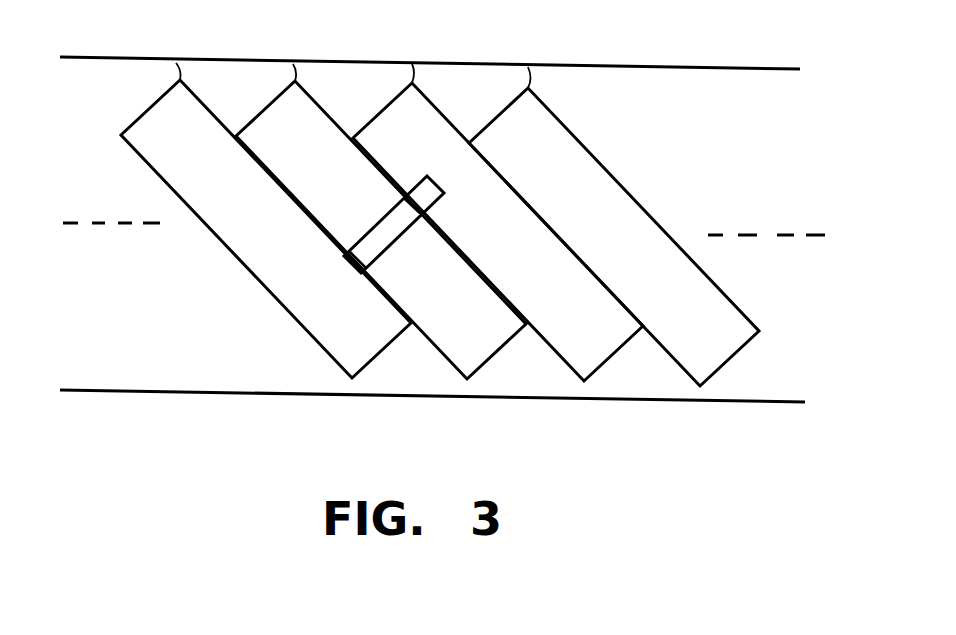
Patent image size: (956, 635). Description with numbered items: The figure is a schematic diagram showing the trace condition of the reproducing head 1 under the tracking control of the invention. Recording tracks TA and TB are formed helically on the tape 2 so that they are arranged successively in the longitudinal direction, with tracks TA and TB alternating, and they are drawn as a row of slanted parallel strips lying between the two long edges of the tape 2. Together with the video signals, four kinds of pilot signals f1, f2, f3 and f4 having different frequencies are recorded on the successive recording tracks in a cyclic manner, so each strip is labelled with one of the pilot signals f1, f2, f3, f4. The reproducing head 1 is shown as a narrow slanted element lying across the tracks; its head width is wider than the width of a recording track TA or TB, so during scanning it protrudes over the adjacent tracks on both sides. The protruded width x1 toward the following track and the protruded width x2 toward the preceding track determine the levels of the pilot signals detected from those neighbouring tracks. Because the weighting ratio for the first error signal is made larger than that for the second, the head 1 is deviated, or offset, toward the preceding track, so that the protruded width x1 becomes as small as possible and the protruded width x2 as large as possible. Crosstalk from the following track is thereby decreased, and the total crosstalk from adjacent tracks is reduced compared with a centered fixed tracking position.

The reproducing head 1 is at (395, 232).
The tape 2 is at (560, 388).
The protruded width toward the following track x1 is at (344, 258).
The protruded width toward the preceding track x2 is at (408, 184).
The pilot signal f1 is at (266, 229).
The pilot signal f2 is at (381, 230).
The pilot signal f3 is at (498, 232).
The pilot signal f4 is at (614, 237).
The recording track TA is at (410, 63).
The recording track TB is at (528, 66).